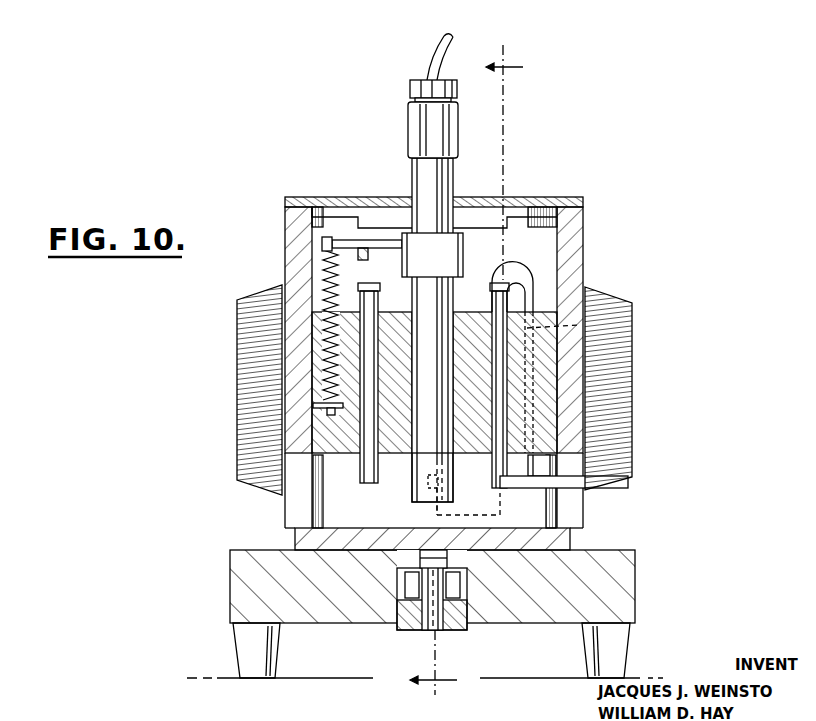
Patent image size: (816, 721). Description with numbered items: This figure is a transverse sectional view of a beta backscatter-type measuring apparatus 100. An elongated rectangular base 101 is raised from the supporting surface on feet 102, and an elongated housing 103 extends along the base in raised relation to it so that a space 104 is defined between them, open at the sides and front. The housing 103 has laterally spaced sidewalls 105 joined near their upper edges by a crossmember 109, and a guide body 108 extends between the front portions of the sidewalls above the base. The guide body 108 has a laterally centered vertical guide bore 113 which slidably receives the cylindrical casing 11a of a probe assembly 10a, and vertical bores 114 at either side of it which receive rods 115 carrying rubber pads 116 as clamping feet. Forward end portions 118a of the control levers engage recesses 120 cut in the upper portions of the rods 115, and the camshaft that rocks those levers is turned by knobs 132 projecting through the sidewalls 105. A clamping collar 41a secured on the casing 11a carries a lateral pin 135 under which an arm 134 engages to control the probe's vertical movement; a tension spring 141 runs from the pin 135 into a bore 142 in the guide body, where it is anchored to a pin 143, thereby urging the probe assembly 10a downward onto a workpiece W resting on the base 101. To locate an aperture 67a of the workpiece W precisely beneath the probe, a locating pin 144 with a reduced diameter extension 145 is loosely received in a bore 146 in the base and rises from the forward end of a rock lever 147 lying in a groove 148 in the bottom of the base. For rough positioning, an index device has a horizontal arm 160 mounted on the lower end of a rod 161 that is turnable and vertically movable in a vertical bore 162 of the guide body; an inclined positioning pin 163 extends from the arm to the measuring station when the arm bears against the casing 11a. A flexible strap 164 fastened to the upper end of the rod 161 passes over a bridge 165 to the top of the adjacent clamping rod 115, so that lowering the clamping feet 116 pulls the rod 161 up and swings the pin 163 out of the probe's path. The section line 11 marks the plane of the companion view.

The probe assembly 10a is at (428, 188).
The cylindrical casing 11a is at (448, 190).
The section line 11 is at (453, 373).
The clamping collar 41a is at (463, 252).
The aperture 67a is at (427, 548).
The measuring apparatus 100 is at (651, 191).
The base 101 is at (637, 597).
The feet 102 is at (245, 650).
The housing 103 is at (585, 264).
The space 104 is at (335, 515).
The sidewalls 105 is at (287, 232).
The guide body 108 is at (237, 456).
The crossmember 109 is at (520, 215).
The guide bore 113 is at (422, 440).
The vertical bores 114 is at (360, 466).
The rods 115 is at (360, 475).
The rubber pads 116 is at (368, 495).
The forward end portions of levers 118a is at (358, 290).
The recesses 120 is at (361, 312).
The knobs 132 is at (237, 380).
The arm 134 is at (368, 250).
The pin 135 is at (356, 246).
The tension spring 141 is at (312, 277).
The bore 142 is at (285, 350).
The pin 143 is at (320, 436).
The locating pin 144 is at (423, 590).
The reduced diameter extension 145 is at (420, 558).
The bore 146 is at (450, 592).
The rock lever 147 is at (414, 632).
The groove 148 is at (462, 630).
The horizontal arm 160 is at (585, 503).
The rod 161 is at (603, 462).
The vertical bore 162 is at (640, 303).
The positioning pin 163 is at (440, 523).
The flexible strap 164 is at (562, 290).
The bridge 165 is at (533, 290).
The workpiece W is at (563, 546).